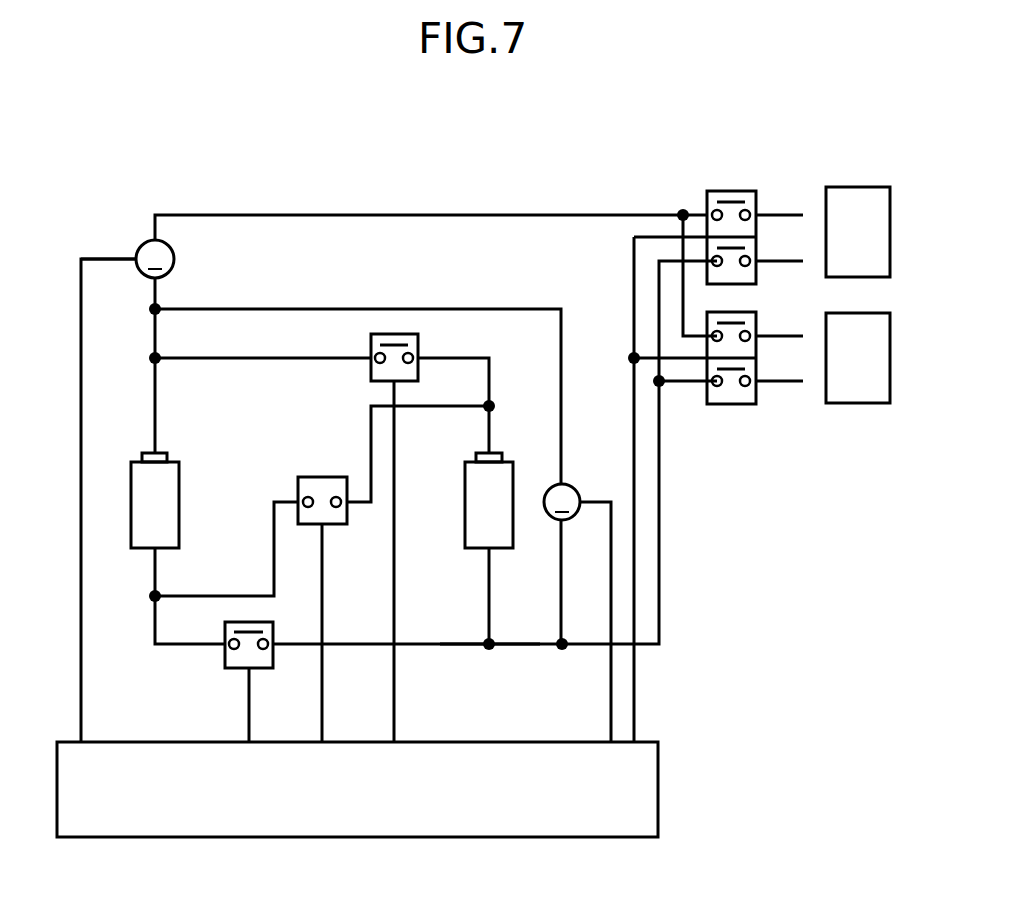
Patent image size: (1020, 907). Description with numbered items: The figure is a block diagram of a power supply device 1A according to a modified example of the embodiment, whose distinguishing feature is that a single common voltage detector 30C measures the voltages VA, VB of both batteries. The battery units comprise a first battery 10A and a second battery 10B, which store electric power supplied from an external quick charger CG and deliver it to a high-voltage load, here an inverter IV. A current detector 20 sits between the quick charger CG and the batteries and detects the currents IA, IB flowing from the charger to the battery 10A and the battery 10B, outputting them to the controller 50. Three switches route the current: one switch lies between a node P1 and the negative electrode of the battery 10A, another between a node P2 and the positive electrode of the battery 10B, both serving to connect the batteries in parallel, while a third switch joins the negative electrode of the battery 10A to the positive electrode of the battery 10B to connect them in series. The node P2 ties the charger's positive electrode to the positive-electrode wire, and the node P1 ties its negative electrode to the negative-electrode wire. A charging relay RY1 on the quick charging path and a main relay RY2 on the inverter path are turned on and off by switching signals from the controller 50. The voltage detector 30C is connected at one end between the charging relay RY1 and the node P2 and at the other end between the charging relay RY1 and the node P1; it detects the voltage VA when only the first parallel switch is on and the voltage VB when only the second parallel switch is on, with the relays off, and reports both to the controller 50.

The power supply device 1A is at (400, 134).
The currents IA, IB is at (108, 259).
The current detector 20 is at (174, 259).
The node P2 is at (155, 358).
The battery 10A is at (172, 458).
The battery 10B is at (503, 460).
The voltage detector 30C is at (578, 488).
The node P1 is at (488, 643).
The voltages VA, VB is at (611, 672).
The controller 50 is at (541, 742).
The charging relay RY1 is at (731, 191).
The main relay RY2 is at (731, 404).
The quick charger CG is at (858, 187).
The inverter IV is at (858, 403).